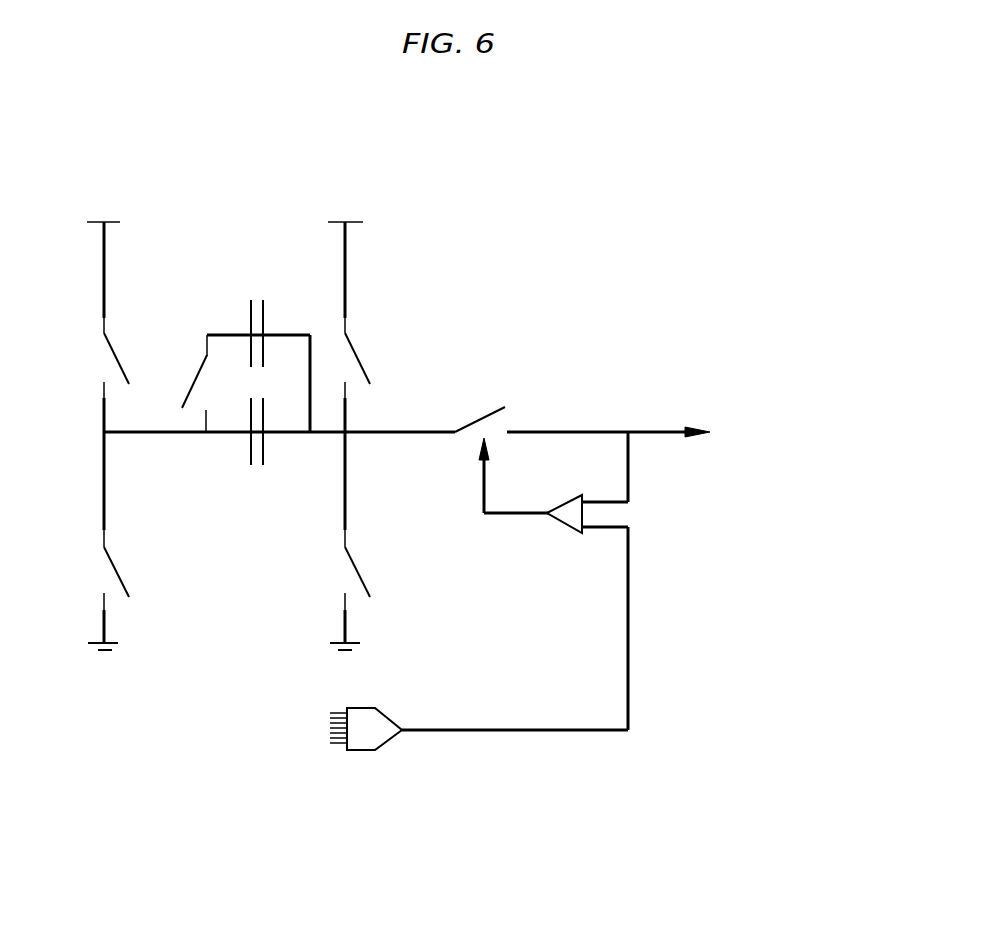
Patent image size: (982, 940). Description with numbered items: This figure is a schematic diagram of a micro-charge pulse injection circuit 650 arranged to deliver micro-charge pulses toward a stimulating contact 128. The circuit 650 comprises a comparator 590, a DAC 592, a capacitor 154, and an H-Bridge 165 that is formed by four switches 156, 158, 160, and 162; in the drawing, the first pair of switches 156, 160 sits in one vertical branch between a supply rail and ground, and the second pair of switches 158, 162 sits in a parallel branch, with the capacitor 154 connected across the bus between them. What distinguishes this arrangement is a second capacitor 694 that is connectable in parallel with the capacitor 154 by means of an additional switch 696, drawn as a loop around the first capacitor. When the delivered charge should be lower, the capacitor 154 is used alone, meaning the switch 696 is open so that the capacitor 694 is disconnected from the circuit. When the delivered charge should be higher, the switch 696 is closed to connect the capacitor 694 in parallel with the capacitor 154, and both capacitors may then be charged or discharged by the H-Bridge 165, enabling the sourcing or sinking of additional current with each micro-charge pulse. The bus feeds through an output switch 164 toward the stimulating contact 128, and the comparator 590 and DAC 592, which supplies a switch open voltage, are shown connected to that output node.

The micro-charge pulse injection circuit 650 is at (607, 210).
The H-Bridge 165 is at (76, 346).
The switch 156 is at (116, 352).
The switch 160 is at (117, 574).
The switch 158 is at (360, 358).
The switch 162 is at (360, 574).
The output switch 164 is at (478, 418).
The second capacitor 694 is at (266, 282).
The capacitor 154 is at (271, 480).
The switch 696 is at (190, 396).
The comparator 590 is at (564, 500).
The DAC 592 is at (388, 712).
The stimulating contact 128 is at (676, 436).